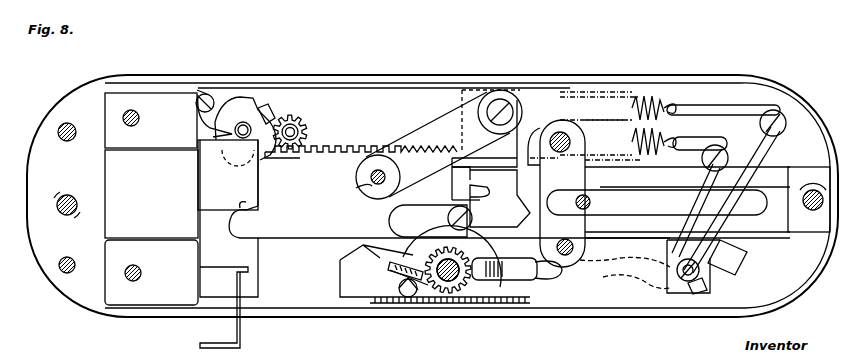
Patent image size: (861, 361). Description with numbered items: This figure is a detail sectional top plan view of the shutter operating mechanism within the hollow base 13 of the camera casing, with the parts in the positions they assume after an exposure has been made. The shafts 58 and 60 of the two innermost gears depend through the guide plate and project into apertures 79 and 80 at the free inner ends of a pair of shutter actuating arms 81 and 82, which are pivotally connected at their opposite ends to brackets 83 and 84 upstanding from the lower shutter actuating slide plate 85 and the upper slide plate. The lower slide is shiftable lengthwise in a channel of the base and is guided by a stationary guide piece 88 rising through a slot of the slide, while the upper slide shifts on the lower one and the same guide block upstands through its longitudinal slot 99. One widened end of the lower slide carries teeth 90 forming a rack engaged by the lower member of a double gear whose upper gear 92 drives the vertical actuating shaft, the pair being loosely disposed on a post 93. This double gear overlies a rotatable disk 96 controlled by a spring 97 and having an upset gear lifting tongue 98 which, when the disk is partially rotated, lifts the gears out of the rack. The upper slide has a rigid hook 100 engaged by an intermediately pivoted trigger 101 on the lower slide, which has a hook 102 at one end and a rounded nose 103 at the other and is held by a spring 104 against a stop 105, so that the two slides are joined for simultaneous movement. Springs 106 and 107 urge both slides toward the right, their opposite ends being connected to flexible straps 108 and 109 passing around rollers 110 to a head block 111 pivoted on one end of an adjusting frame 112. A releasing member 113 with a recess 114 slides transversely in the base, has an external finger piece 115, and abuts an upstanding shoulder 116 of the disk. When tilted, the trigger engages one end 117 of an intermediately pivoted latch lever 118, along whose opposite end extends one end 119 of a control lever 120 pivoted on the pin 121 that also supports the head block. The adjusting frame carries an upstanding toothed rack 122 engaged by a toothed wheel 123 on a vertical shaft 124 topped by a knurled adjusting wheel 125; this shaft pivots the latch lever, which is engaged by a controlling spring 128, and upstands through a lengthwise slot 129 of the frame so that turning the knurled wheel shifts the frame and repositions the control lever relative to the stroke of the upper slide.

The hollow base 13 is at (790, 298).
The shaft 58 is at (370, 177).
The shaft 60 is at (578, 215).
The aperture 79 is at (357, 188).
The aperture 80 is at (575, 247).
The shutter actuating arm 81 is at (442, 122).
The shutter actuating arm 82 is at (578, 180).
The bracket 83 is at (470, 97).
The bracket 84 is at (575, 140).
The lower shutter actuating slide plate 85 is at (316, 163).
The stationary guide piece 88 is at (612, 206).
The teeth 90 is at (366, 150).
The upper gear 92 is at (298, 128).
The post 93 is at (300, 131).
The rotatable disk 96 is at (245, 105).
The spring 97 is at (212, 131).
The gear lifting tongue 98 is at (268, 110).
The longitudinal slot 99 is at (672, 215).
The rigid hook 100 is at (477, 184).
The trigger 101 is at (458, 193).
The hook 102 is at (497, 197).
The rounded nose 103 is at (392, 222).
The spring 104 is at (447, 157).
The stop 105 is at (448, 217).
The spring 106 is at (645, 96).
The spring 107 is at (676, 138).
The flexible strap 108 is at (700, 108).
The flexible strap 109 is at (738, 160).
The rollers 110 is at (780, 140).
The head block 111 is at (705, 272).
The adjusting frame 112 is at (612, 285).
The releasing member 113 is at (208, 200).
The recess 114 is at (250, 206).
The finger piece 115 is at (238, 330).
The upstanding shoulder 116 is at (205, 150).
The end of latch lever 117 is at (358, 246).
The latch lever 118 is at (515, 284).
The end of control lever 119 is at (580, 275).
The control lever 120 is at (742, 258).
The pin 121 is at (710, 290).
The toothed rack 122 is at (520, 290).
The toothed wheel 123 is at (458, 288).
The vertical shaft 124 is at (452, 282).
The knurled adjusting wheel 125 is at (455, 310).
The controlling spring 128 is at (412, 282).
The lengthwise slot 129 is at (386, 268).